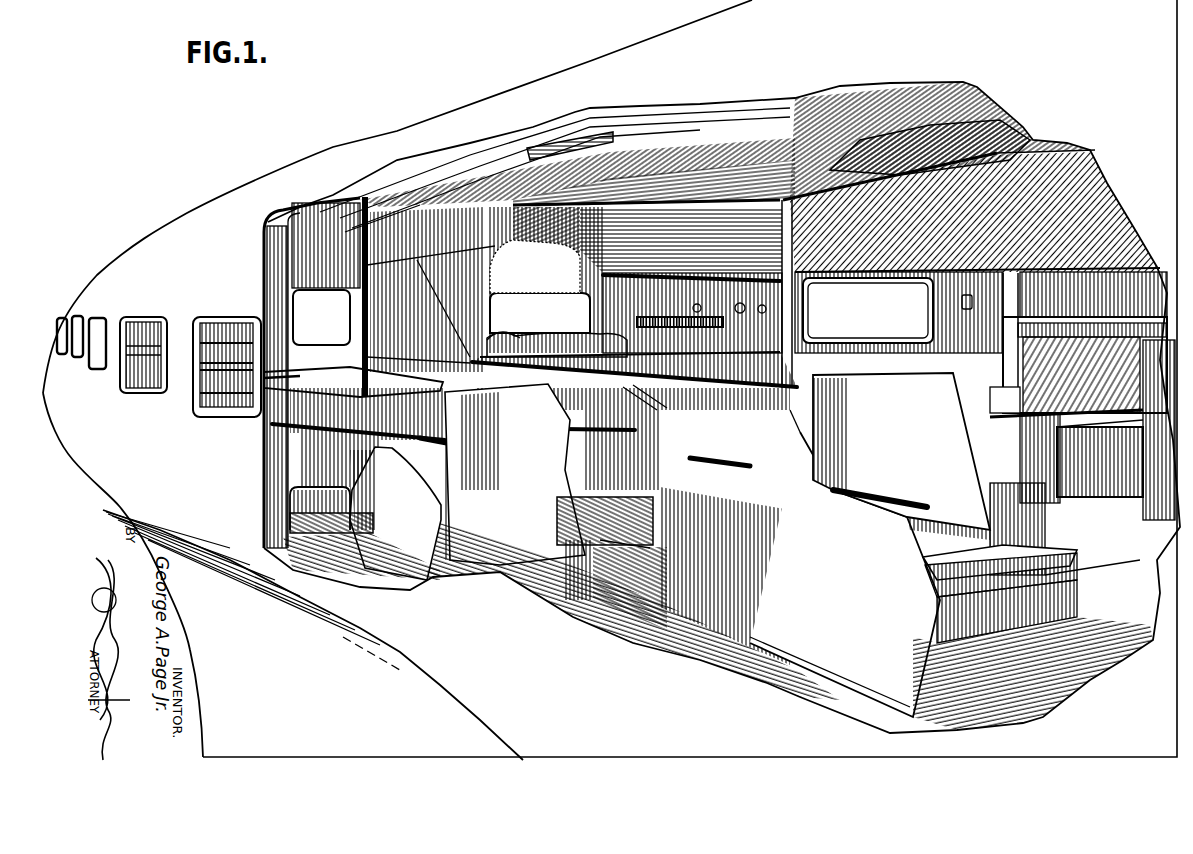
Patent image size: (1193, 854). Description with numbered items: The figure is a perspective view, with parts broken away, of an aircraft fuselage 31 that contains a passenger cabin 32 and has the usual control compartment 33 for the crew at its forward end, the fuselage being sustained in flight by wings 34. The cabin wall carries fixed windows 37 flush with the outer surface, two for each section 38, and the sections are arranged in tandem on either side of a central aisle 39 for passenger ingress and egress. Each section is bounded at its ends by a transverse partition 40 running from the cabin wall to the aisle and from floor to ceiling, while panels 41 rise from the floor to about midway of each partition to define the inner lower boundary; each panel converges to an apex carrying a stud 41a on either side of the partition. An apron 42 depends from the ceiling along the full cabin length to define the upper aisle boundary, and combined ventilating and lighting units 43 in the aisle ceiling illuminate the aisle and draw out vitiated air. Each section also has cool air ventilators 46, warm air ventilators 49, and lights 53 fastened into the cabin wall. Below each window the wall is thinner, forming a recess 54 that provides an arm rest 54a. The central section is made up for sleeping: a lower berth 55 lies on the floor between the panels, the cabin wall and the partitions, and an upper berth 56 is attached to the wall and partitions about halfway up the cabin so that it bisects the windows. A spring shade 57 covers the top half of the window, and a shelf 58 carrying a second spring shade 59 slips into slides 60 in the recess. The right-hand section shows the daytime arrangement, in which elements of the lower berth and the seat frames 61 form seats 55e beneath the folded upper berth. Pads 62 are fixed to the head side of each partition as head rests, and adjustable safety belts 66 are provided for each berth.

The aircraft fuselage 31 is at (397, 378).
The passenger cabin 32 is at (703, 120).
The control compartment 33 is at (68, 317).
The wing 34 is at (313, 635).
The window 37 is at (203, 313).
The section 38 is at (614, 437).
The central aisle 39 is at (718, 626).
The transverse partition 40 is at (582, 385).
The panel 41 is at (432, 527).
The stud 41a is at (784, 427).
The apron 42 is at (452, 224).
The combined ventilating and lighting unit 43 is at (600, 150).
The cool air ventilator 46 is at (700, 306).
The warm air ventilator 49 is at (767, 309).
The light 53 is at (960, 303).
The recess 54 is at (1057, 440).
The arm rest 54a is at (1100, 570).
The lower berth 55 is at (478, 563).
The seat 55e is at (945, 508).
The upper berth 56 is at (1070, 190).
The spring shade 57 is at (288, 338).
The shelf 58 is at (278, 373).
The second spring shade 59 is at (280, 428).
The slide 60 is at (1005, 400).
The seat frame 61 is at (780, 280).
The pad 62 is at (318, 291).
The safety belt 66 is at (570, 345).